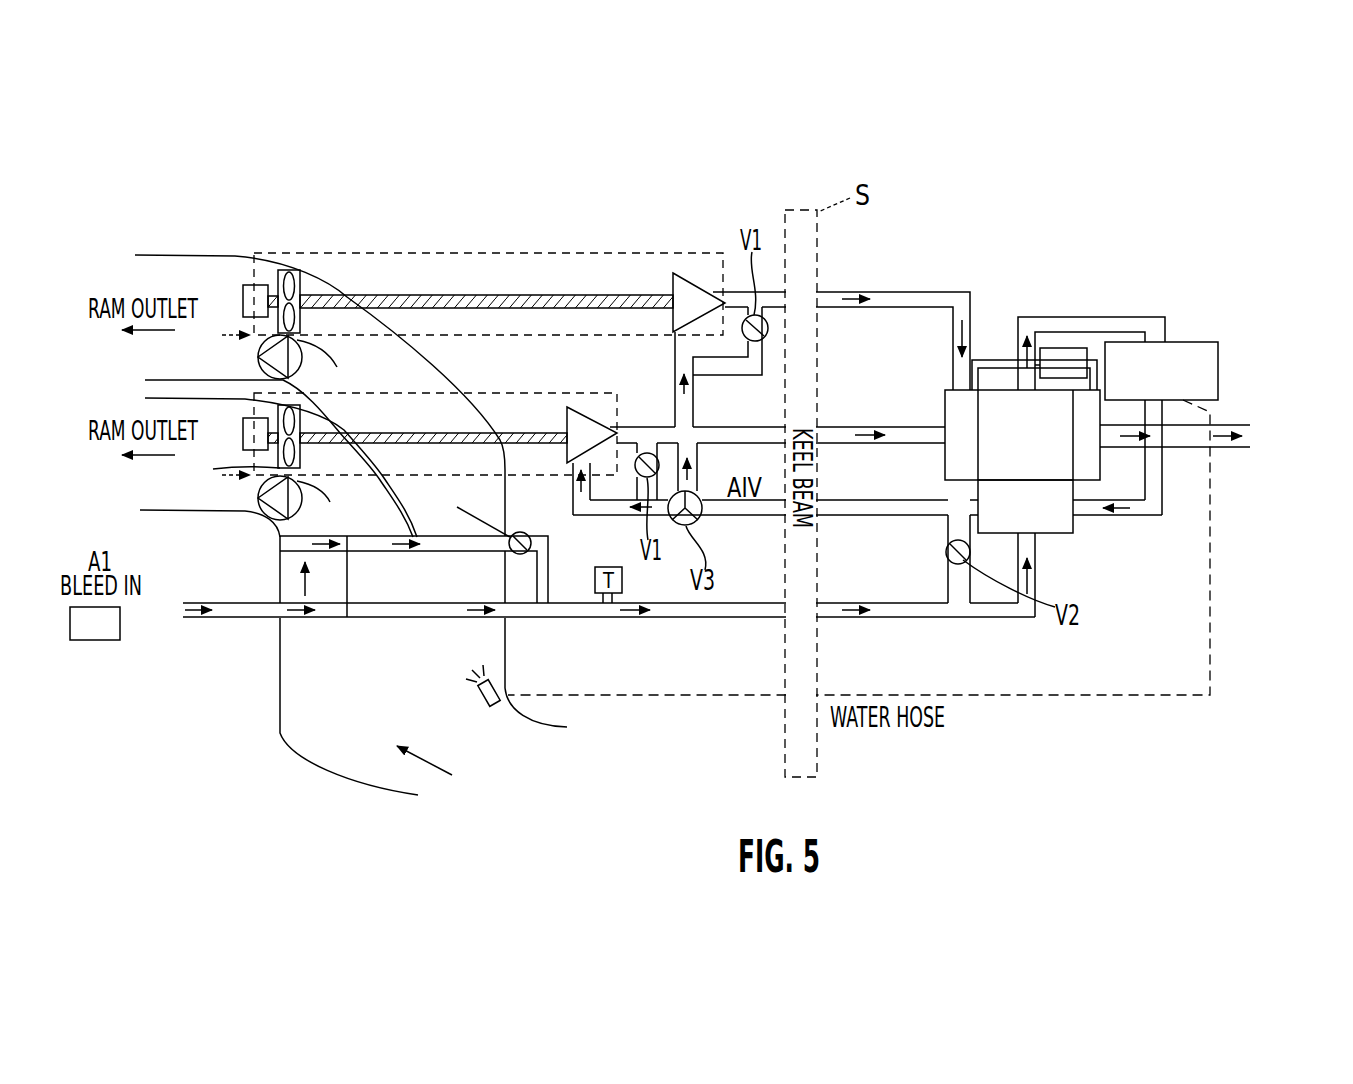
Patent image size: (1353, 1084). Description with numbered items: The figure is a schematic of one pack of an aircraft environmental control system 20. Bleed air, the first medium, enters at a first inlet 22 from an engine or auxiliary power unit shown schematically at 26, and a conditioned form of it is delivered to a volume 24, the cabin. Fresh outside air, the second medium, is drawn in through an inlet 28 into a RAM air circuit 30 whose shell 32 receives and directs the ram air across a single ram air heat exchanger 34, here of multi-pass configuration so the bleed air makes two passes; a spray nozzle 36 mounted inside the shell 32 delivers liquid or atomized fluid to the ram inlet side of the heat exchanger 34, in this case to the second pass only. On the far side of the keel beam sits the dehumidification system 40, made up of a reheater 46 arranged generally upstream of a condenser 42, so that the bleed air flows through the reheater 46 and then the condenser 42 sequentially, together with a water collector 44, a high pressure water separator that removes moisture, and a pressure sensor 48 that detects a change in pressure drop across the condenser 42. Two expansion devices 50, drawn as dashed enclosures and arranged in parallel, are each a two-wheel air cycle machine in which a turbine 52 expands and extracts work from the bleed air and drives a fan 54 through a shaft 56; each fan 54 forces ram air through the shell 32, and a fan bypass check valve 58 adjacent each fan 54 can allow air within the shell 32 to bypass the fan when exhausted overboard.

The environmental control system 20 is at (250, 162).
The first inlet 22 is at (175, 618).
The volume 24 is at (1220, 451).
The engine or auxiliary power unit 26 is at (108, 637).
The inlet 28 is at (535, 738).
The RAM air circuit 30 is at (240, 722).
The shell 32 is at (288, 745).
The ram air heat exchanger 34 is at (330, 592).
The spray nozzle 36 is at (482, 700).
The dehumidification system 40 is at (1192, 304).
The condenser 42 is at (963, 405).
The water collector 44 is at (1220, 362).
The reheater 46 is at (1055, 525).
The pressure sensor 48 is at (1058, 348).
The expansion device 50 is at (558, 252).
The turbine 52 is at (695, 290).
The fan 54 is at (295, 272).
The shaft 56 is at (365, 295).
The fan bypass check valve 58 is at (258, 357).